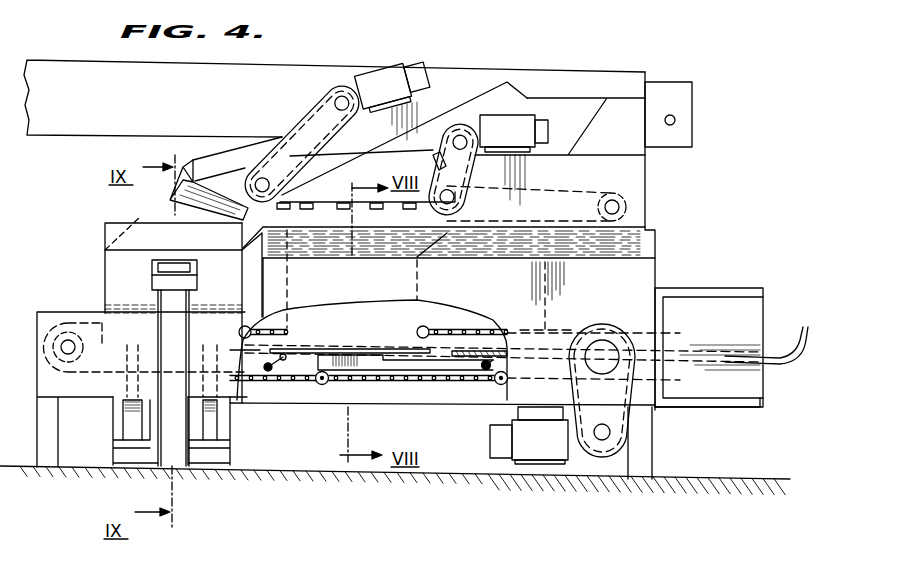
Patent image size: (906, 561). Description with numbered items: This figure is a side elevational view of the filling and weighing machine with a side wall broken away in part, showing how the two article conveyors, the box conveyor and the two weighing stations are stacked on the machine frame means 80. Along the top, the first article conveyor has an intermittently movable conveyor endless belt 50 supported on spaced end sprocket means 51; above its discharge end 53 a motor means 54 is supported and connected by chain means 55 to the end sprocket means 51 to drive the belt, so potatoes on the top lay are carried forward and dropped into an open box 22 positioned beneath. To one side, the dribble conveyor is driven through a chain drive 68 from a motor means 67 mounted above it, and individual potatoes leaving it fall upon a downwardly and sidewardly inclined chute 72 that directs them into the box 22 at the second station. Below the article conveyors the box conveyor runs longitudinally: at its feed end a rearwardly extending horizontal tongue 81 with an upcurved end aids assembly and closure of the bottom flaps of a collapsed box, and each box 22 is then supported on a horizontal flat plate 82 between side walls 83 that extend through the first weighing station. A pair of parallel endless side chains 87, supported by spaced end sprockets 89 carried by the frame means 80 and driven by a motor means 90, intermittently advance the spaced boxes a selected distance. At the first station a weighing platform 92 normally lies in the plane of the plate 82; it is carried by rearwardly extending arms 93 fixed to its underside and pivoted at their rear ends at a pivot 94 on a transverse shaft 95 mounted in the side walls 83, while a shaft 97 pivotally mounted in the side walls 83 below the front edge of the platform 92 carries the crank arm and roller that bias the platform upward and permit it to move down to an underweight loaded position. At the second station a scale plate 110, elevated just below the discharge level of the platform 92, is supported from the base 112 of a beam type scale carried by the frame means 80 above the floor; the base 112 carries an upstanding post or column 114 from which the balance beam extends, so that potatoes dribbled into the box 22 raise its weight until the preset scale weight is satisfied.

The box 22 is at (105, 264).
The conveyor endless belt 50 is at (600, 188).
The end sprocket means 51 is at (628, 208).
The discharge end 53 is at (486, 176).
The motor means 54 is at (510, 122).
The chain means 55 is at (460, 124).
The motor means 67 is at (388, 70).
The chain drive 68 is at (305, 120).
The chute 72 is at (213, 190).
The machine frame means 80 is at (666, 446).
The horizontal tongue 81 is at (805, 340).
The plate 82 is at (500, 385).
The side walls 83 is at (450, 287).
The endless side chains 87 is at (445, 382).
The end sprockets 89 is at (620, 345).
The motor means 90 is at (545, 447).
The weighing platform 92 is at (316, 383).
The rearwardly extending arms 93 is at (393, 372).
The pivot 94 is at (485, 366).
The transverse shaft 95 is at (495, 398).
The shaft 97 is at (266, 372).
The scale plate 110 is at (124, 345).
The base 112 is at (198, 447).
The post or column 114 is at (178, 333).